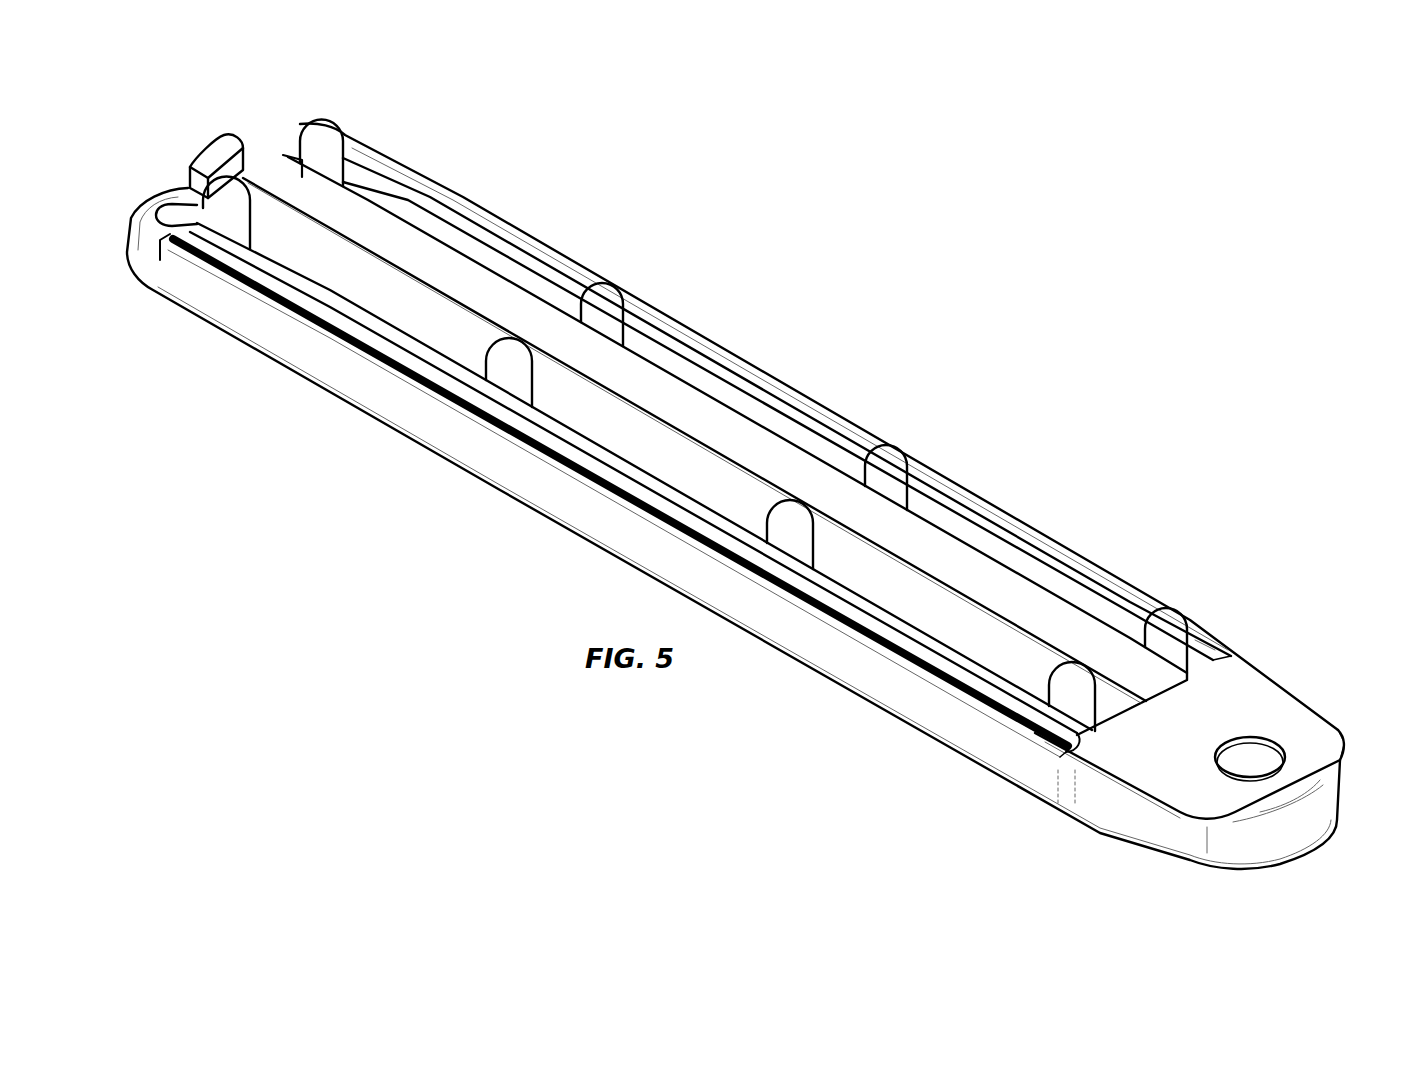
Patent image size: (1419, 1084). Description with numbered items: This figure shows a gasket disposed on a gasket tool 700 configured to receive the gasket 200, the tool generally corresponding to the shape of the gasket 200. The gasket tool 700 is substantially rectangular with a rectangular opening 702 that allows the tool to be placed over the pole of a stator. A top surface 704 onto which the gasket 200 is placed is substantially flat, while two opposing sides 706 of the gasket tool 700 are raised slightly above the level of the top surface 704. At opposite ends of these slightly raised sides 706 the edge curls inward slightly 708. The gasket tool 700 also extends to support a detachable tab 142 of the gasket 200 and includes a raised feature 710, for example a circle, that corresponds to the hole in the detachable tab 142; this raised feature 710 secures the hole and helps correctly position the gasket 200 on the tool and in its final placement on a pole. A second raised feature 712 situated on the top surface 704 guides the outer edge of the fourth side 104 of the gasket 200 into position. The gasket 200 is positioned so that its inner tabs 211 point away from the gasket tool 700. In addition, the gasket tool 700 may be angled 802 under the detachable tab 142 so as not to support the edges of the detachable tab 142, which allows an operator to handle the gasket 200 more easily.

The gasket tool 700 is at (513, 540).
The rectangular opening 702 is at (358, 252).
The opposing sides 706 is at (838, 400).
The inner tabs 211 is at (492, 352).
The fourth side 104 is at (255, 160).
The second raised feature 712 is at (196, 137).
The inward curl 708 is at (1190, 600).
The top surface 704 is at (1078, 768).
The gasket 200 is at (1204, 686).
The detachable tab 142 is at (1314, 718).
The angled portion 802 is at (1128, 868).
The raised feature 710 is at (1243, 785).